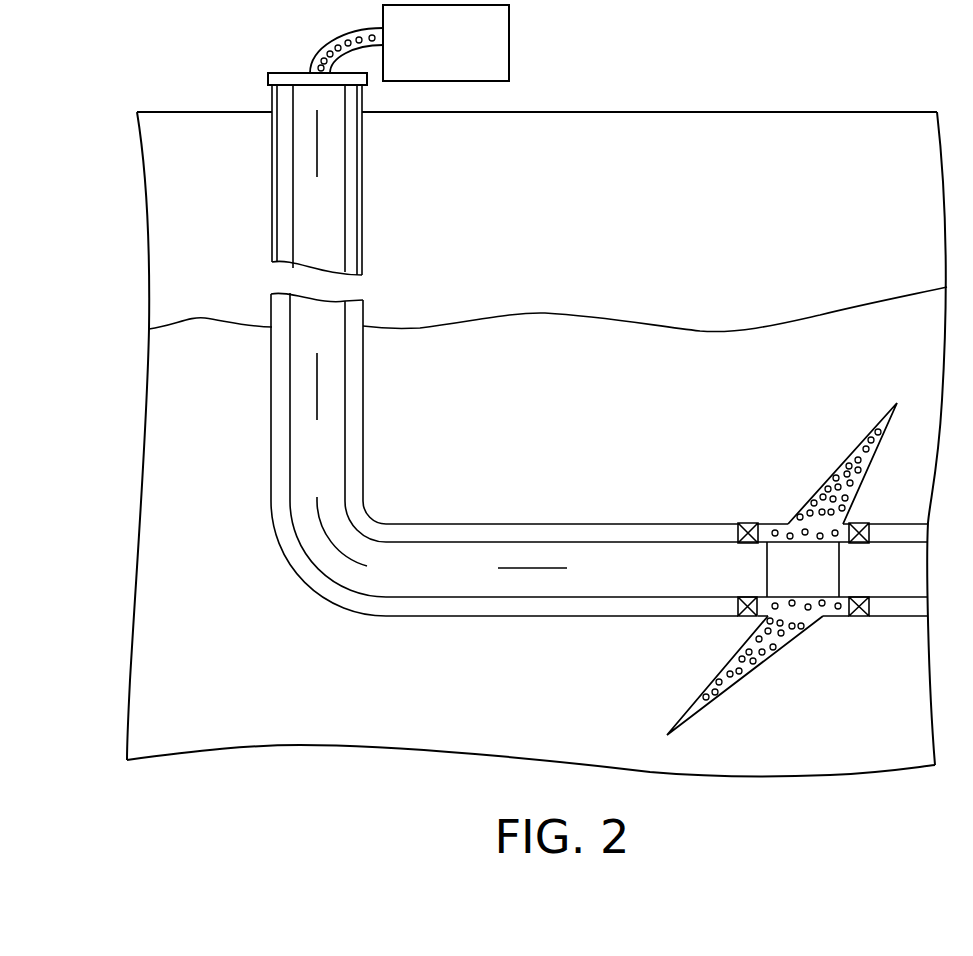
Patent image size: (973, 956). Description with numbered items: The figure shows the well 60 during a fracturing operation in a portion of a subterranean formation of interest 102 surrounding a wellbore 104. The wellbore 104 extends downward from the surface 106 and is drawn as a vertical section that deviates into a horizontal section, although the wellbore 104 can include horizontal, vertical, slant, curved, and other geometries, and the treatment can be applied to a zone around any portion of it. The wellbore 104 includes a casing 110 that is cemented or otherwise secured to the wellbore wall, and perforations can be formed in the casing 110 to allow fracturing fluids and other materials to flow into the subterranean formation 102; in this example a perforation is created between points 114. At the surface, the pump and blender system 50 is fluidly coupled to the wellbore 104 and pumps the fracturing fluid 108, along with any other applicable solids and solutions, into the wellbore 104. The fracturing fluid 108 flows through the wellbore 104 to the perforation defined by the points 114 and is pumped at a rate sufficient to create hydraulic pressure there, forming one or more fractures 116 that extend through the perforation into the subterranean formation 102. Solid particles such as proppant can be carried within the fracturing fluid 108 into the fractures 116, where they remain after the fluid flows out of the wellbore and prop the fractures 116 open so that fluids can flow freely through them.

The pump and blender system 50 is at (433, 56).
The well 60 is at (275, 629).
The subterranean formation of interest 102 is at (577, 394).
The wellbore 104 is at (285, 201).
The surface 106 is at (697, 112).
The fracturing fluid 108 is at (322, 56).
The casing 110 is at (275, 244).
The points 114 is at (750, 522).
The fractures 116 is at (812, 462).